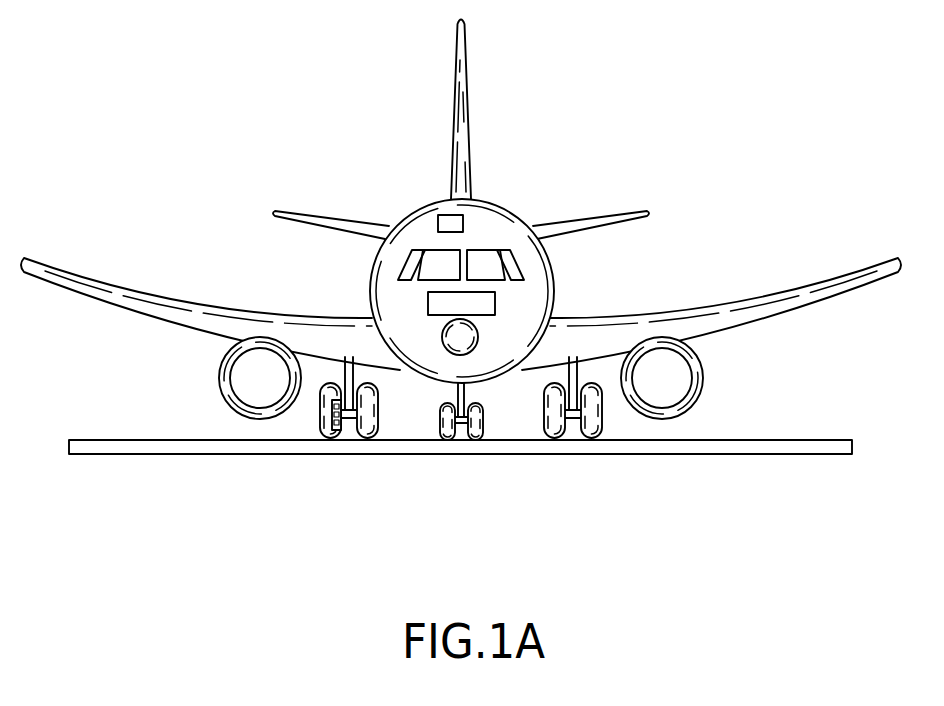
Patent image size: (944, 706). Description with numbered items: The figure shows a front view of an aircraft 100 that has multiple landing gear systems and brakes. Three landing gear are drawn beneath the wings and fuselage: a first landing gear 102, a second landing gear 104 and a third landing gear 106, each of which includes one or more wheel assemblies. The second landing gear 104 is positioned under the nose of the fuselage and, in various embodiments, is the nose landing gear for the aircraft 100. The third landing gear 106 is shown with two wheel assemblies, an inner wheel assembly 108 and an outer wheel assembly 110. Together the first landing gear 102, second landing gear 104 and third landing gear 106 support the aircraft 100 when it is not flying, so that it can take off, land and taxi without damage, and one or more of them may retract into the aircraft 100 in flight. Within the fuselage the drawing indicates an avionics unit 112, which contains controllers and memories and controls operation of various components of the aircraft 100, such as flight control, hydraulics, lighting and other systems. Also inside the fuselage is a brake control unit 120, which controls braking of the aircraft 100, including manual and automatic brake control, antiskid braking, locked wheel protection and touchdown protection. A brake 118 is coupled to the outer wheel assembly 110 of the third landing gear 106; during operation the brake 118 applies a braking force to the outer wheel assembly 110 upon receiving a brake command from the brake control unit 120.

The aircraft 100 is at (461, 294).
The first landing gear 102 is at (634, 442).
The second landing gear 104 is at (499, 440).
The third landing gear 106 is at (341, 467).
The inner wheel assembly 108 is at (373, 440).
The outer wheel assembly 110 is at (331, 439).
The avionics unit 112 is at (463, 222).
The brake 118 is at (333, 440).
The brake control unit (BCU) 120 is at (495, 307).